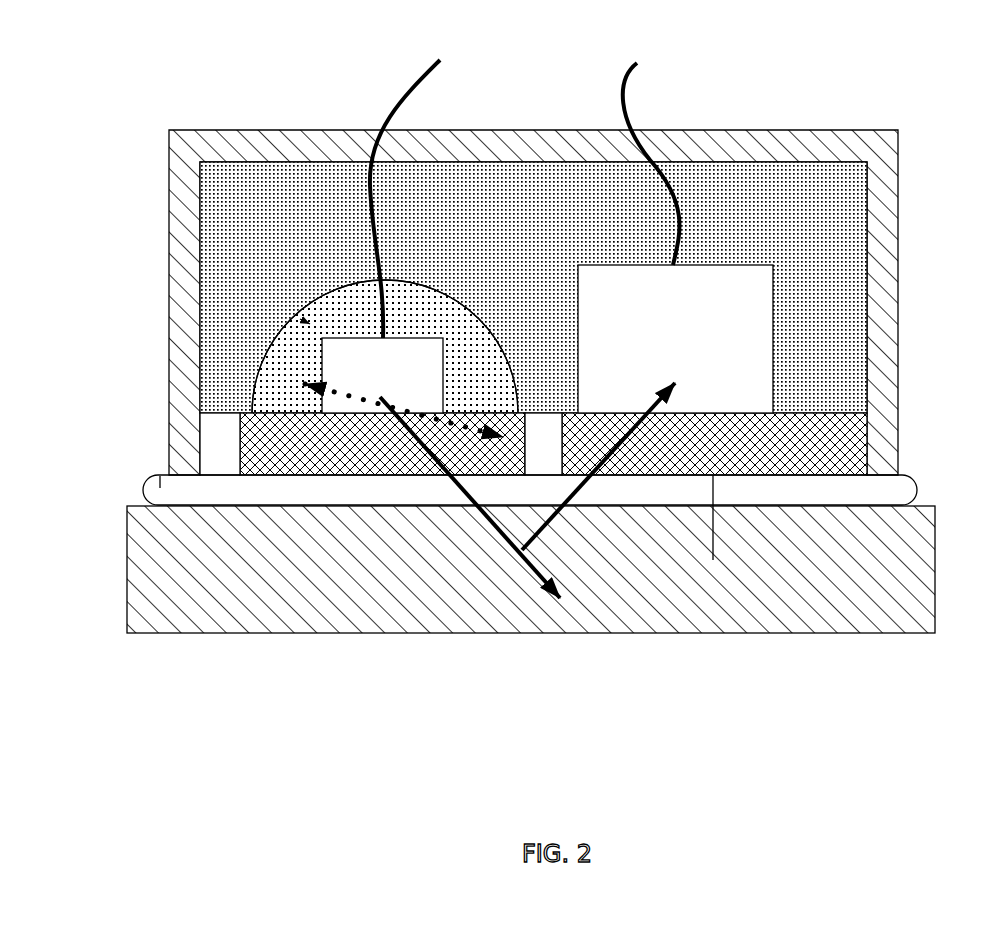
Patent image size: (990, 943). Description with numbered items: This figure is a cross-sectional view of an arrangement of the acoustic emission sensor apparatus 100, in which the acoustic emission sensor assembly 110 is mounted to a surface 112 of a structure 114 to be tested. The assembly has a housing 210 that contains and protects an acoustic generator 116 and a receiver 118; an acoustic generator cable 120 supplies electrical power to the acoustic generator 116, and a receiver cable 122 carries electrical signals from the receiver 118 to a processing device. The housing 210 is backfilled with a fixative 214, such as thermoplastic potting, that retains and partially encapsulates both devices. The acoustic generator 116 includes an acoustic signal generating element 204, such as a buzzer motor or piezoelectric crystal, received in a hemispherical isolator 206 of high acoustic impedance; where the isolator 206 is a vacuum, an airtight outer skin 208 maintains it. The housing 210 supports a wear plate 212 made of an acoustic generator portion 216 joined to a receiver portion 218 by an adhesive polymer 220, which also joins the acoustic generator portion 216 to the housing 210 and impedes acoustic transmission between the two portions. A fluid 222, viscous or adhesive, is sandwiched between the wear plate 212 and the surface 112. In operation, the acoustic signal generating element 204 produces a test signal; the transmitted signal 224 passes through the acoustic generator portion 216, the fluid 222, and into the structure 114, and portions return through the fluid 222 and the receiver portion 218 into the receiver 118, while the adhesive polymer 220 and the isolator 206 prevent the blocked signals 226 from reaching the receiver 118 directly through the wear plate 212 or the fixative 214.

The acoustic emission sensor apparatus 100 is at (730, 58).
The acoustic emission sensor assembly 110 is at (535, 284).
The surface 112 is at (143, 482).
The structure 114 is at (127, 582).
The acoustic generator 116 is at (300, 319).
The receiver 118 is at (658, 349).
The acoustic generator cable 120 is at (370, 123).
The receiver cable 122 is at (620, 100).
The acoustic signal generating element 204 is at (365, 390).
The isolator 206 is at (326, 326).
The airtight outer skin 208 is at (320, 292).
The housing 210 is at (185, 192).
The wear plate 212 is at (713, 560).
The fixative 214 is at (513, 300).
The acoustic generator portion 216 is at (340, 454).
The receiver portion 218 is at (697, 454).
The adhesive polymer 220 is at (220, 443).
The fluid 222 is at (160, 476).
The transmitted signal 224 is at (510, 557).
The blocked signals 226 is at (462, 422).